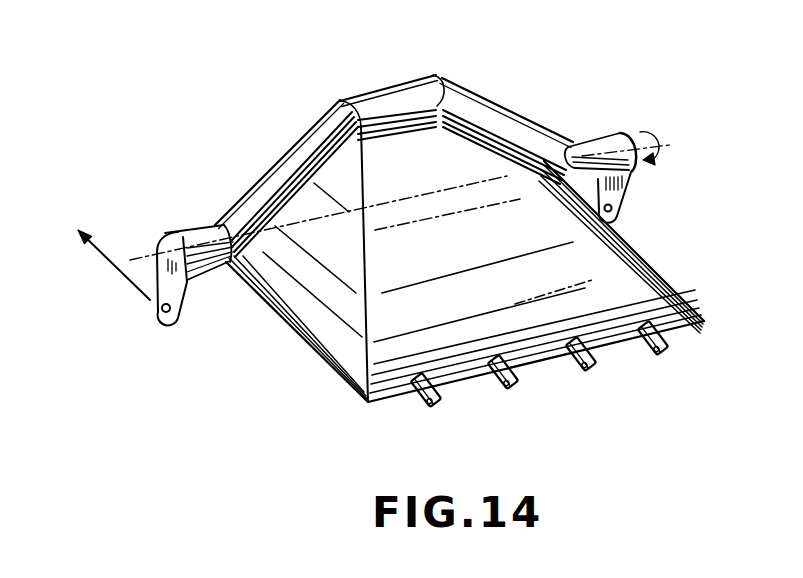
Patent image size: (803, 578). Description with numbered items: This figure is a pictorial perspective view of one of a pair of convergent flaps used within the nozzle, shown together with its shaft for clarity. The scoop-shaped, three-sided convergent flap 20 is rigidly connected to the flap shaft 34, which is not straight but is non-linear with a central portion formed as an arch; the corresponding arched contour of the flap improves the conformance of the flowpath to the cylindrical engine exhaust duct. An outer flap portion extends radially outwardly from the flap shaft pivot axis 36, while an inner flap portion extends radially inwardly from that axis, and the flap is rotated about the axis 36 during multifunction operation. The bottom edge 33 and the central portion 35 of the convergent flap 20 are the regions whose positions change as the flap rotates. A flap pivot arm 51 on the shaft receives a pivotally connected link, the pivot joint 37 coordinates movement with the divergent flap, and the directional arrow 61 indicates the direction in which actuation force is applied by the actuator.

The convergent flap 20 is at (608, 246).
The bottom edge 33 is at (322, 357).
The flap shaft 34 is at (364, 91).
The central portion 35 is at (588, 276).
The flap shaft pivot axis 36 is at (632, 137).
The pivot joint 37 is at (657, 353).
The flap pivot arm 51 is at (184, 318).
The directional arrow 61 is at (113, 267).